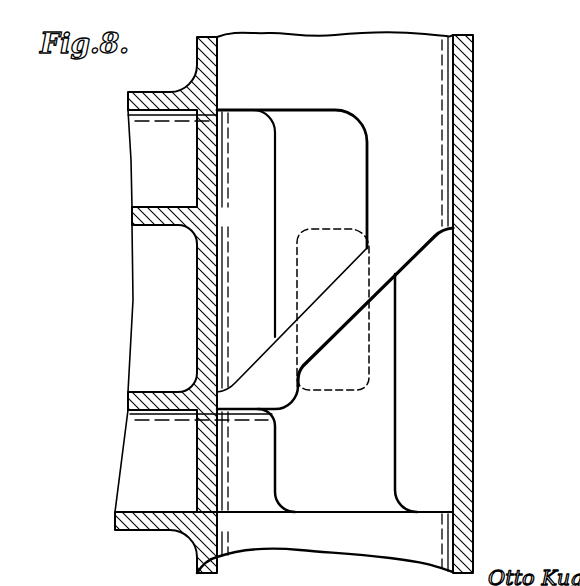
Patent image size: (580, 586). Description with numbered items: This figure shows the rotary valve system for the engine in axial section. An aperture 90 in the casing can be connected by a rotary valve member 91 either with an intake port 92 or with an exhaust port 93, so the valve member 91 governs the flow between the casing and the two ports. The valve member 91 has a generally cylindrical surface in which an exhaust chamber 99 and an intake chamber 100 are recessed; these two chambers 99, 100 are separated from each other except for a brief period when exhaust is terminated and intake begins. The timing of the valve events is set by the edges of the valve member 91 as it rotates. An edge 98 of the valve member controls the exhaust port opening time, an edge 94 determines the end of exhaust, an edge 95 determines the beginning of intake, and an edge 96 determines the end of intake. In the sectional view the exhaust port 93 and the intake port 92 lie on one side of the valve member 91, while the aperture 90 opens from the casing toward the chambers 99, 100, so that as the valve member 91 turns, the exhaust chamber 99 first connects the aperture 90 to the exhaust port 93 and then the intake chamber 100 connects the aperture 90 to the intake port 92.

The aperture 90 is at (350, 375).
The rotary valve member 91 is at (367, 464).
The intake port 92 is at (136, 454).
The exhaust port 93 is at (140, 155).
The edge 94 is at (345, 275).
The edge 95 is at (412, 258).
The edge 96 is at (396, 362).
The edge 98 is at (275, 230).
The exhaust chamber 99 is at (258, 309).
The intake chamber 100 is at (440, 482).